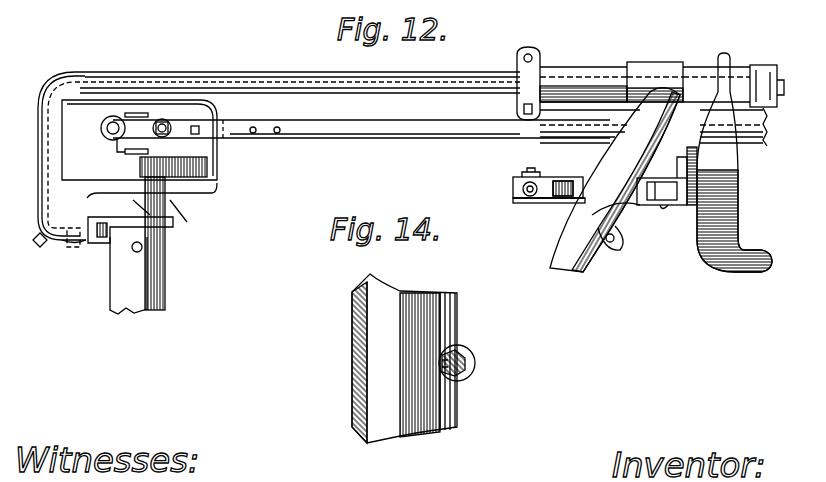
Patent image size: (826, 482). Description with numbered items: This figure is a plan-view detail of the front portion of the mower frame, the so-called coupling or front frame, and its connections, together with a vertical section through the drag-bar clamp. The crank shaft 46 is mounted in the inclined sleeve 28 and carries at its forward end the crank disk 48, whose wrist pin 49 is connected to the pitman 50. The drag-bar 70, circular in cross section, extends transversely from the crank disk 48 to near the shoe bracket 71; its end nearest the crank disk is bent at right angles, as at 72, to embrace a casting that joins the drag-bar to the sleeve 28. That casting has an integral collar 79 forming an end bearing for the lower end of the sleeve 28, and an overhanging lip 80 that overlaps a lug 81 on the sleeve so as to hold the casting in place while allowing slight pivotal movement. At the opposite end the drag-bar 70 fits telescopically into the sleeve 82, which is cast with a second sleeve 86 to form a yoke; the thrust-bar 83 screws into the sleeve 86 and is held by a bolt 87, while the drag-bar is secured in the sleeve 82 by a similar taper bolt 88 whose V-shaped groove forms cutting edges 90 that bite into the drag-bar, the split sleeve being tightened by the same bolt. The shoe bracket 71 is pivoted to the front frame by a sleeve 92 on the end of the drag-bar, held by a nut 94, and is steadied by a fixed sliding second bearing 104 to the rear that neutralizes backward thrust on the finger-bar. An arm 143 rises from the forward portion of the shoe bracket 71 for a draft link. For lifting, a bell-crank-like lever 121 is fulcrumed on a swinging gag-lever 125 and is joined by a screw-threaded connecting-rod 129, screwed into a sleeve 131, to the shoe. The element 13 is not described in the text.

In FIG. 12, the bracket 13 is at (173, 203).
In FIG. 12, the sleeve 28 is at (137, 293).
In FIG. 12, the crank shaft 46 is at (140, 150).
In FIG. 12, the crank disk 48 is at (157, 163).
In FIG. 12, the wrist pin 49 is at (145, 113).
In FIG. 12, the pitman 50 is at (355, 128).
In FIG. 12, the drag-bar 70 is at (420, 90).
In FIG. 14, the drag-bar 70 is at (392, 413).
In FIG. 12, the shoe bracket 71 is at (732, 190).
In FIG. 12, the angularly-disposed portion of the drag-bar 72 is at (40, 130).
In FIG. 12, the collar 79 is at (150, 215).
In FIG. 12, the overhanging lip 80 is at (83, 250).
In FIG. 12, the lug 81 is at (103, 243).
In FIG. 12, the sleeve 82 is at (570, 78).
In FIG. 14, the sleeve 82 is at (358, 393).
In FIG. 12, the thrust-bar 83 is at (182, 0).
In FIG. 12, the sleeve 86 is at (627, 160).
In FIG. 12, the bolt 87 is at (610, 245).
In FIG. 12, the bolt 88 is at (517, 110).
In FIG. 14, the bolt 88 is at (465, 363).
In FIG. 14, the cutting edges 90 is at (458, 345).
In FIG. 12, the sleeve 92 is at (695, 67).
In FIG. 12, the nut 94 is at (768, 70).
In FIG. 12, the second bearing 104 is at (688, 208).
In FIG. 12, the lever 121 is at (530, 204).
In FIG. 12, the gag-lever 125 is at (568, 199).
In FIG. 12, the connecting-rod 129 is at (517, 181).
In FIG. 12, the sleeve 131 is at (717, 203).
In FIG. 12, the arm 143 is at (725, 53).